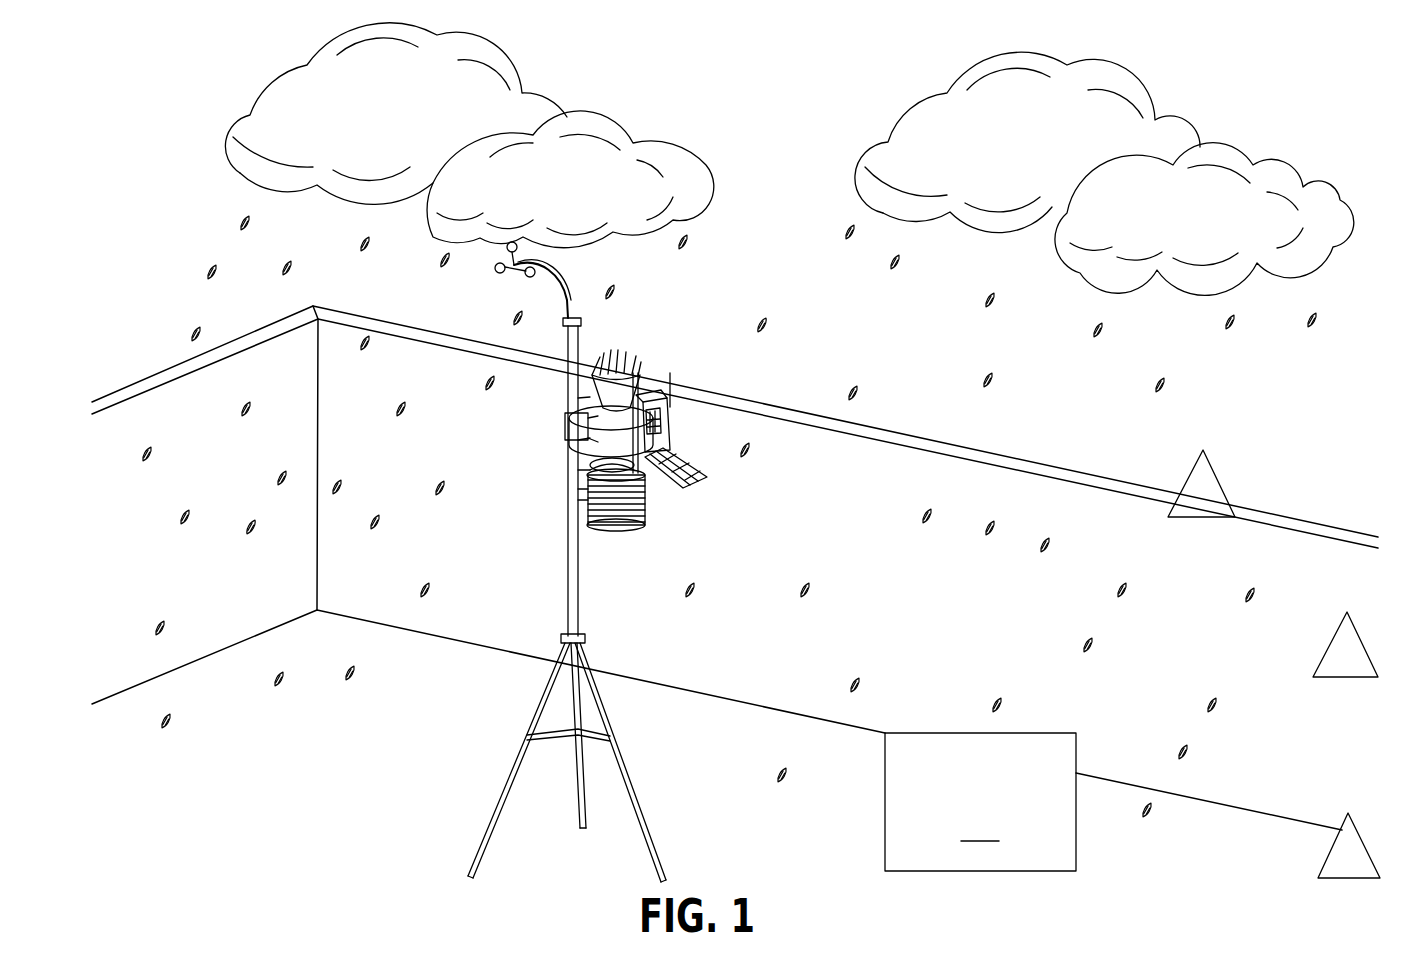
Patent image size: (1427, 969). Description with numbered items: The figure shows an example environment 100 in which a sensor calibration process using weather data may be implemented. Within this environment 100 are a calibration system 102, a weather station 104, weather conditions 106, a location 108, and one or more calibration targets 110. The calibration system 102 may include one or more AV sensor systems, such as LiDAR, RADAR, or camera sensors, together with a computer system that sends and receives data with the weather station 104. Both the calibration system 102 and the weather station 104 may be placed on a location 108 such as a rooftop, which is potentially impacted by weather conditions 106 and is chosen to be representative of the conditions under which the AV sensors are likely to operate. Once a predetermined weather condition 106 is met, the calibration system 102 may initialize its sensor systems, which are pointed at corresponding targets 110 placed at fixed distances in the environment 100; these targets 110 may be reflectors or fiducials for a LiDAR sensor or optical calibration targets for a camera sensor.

The environment 100 is at (136, 76).
The calibration system 102 is at (980, 802).
The weather station 104 is at (655, 365).
The weather conditions 106 is at (640, 127).
The location 108 is at (990, 450).
The calibration targets 110 is at (1215, 478).